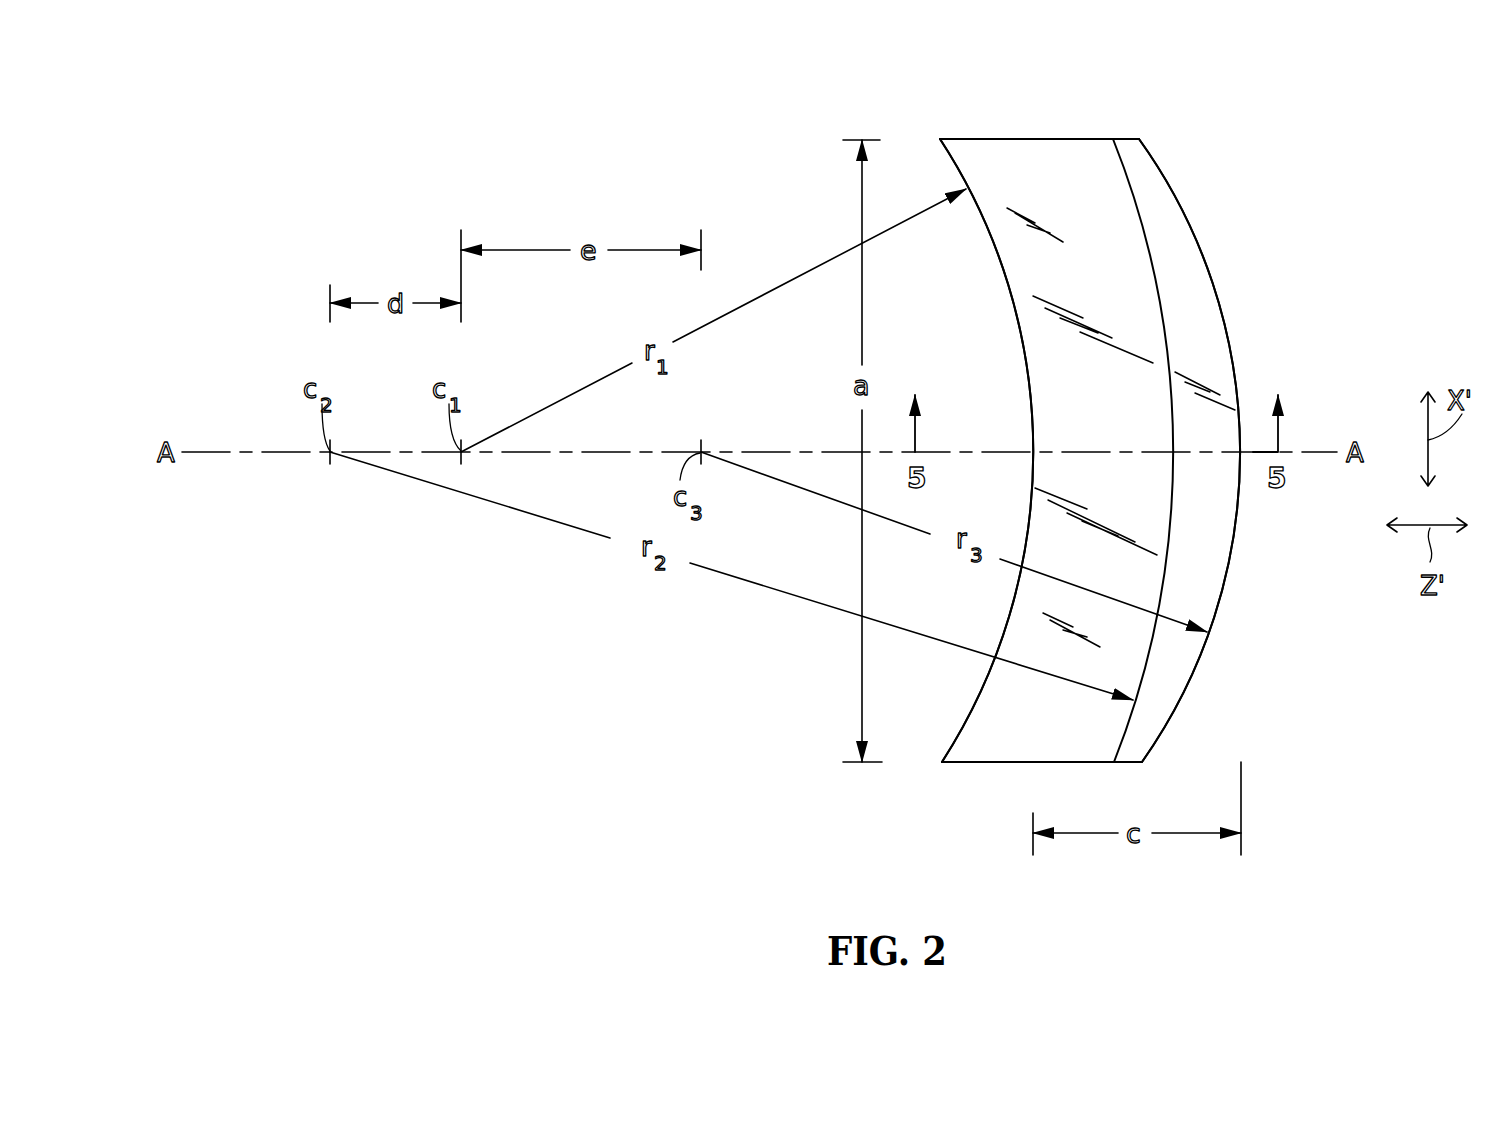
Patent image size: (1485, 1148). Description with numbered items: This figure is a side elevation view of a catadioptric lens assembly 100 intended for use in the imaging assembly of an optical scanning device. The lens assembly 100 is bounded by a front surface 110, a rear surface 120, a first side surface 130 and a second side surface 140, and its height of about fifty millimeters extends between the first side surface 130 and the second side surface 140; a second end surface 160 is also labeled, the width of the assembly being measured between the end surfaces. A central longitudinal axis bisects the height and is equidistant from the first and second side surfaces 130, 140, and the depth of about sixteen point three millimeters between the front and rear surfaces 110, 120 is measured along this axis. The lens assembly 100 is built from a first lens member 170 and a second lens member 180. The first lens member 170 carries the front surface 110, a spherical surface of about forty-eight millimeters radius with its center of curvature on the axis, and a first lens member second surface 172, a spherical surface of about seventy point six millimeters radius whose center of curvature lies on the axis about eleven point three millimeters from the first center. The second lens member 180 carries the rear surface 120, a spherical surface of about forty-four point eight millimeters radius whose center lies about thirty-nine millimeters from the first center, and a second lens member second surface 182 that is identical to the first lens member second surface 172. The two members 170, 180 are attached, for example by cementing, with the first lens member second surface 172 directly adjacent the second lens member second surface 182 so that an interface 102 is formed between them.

The lens assembly 100 is at (1262, 168).
The interface 102 is at (1168, 340).
The front surface 110 is at (1013, 318).
The rear surface 120 is at (1222, 586).
The first side surface 130 is at (981, 138).
The second side surface 140 is at (1042, 763).
The second end surface 160 is at (1106, 418).
The first lens member 170 is at (1058, 170).
The first lens member second surface 172 is at (1170, 527).
The second lens member 180 is at (1187, 295).
The second lens member second surface 182 is at (1152, 278).